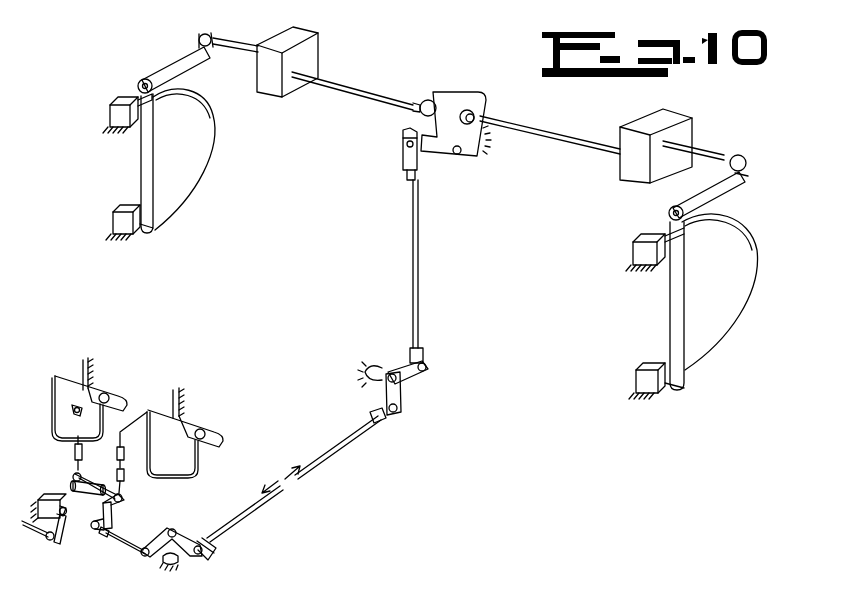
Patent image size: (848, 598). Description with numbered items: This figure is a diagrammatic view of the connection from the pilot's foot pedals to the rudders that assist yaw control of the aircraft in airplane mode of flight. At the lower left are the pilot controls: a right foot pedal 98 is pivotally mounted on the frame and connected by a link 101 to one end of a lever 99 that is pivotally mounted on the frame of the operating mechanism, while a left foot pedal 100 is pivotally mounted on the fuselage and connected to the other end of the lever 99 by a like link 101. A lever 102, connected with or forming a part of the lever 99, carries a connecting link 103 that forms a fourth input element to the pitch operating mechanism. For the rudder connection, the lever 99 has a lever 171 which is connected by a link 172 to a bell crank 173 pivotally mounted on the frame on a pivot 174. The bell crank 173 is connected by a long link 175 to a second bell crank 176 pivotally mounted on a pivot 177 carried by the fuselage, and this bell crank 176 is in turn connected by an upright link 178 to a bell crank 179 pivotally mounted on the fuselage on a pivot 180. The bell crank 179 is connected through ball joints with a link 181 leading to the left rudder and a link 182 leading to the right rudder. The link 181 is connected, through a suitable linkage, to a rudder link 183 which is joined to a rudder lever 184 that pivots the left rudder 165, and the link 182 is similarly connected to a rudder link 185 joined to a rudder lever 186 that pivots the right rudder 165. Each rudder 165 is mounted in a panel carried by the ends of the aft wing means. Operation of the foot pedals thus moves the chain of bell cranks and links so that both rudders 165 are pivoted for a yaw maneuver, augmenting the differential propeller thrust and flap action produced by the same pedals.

The right foot pedal 98 is at (58, 411).
The lever 99 is at (112, 493).
The left foot pedal 100 is at (200, 466).
The link 101 is at (74, 447).
The lever 102 is at (64, 531).
The connecting link 103 is at (36, 541).
The rudder 165 is at (185, 190).
The lever 171 is at (105, 511).
The link 172 is at (121, 551).
The bell crank 173 is at (186, 558).
The pivot 174 is at (178, 530).
The link 175 is at (295, 492).
The bell crank 176 is at (402, 403).
The pivot 177 is at (398, 381).
The link 178 is at (421, 265).
The bell crank 179 is at (440, 152).
The pivot 180 is at (467, 152).
The link 181 is at (560, 145).
The link 182 is at (372, 92).
The rudder link 183 is at (712, 152).
The rudder lever 184 is at (733, 189).
The rudder link 185 is at (238, 40).
The rudder lever 186 is at (180, 64).